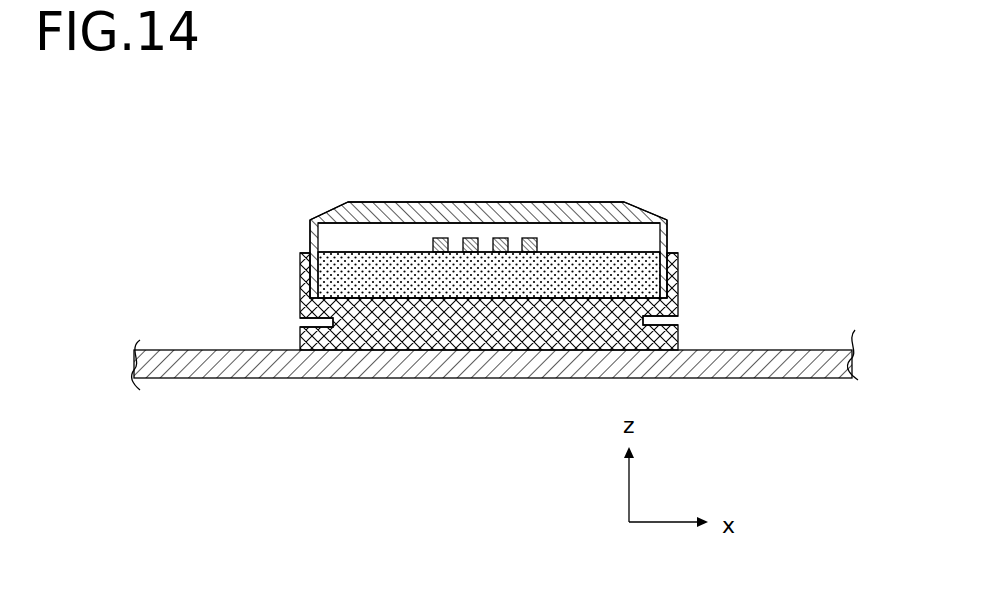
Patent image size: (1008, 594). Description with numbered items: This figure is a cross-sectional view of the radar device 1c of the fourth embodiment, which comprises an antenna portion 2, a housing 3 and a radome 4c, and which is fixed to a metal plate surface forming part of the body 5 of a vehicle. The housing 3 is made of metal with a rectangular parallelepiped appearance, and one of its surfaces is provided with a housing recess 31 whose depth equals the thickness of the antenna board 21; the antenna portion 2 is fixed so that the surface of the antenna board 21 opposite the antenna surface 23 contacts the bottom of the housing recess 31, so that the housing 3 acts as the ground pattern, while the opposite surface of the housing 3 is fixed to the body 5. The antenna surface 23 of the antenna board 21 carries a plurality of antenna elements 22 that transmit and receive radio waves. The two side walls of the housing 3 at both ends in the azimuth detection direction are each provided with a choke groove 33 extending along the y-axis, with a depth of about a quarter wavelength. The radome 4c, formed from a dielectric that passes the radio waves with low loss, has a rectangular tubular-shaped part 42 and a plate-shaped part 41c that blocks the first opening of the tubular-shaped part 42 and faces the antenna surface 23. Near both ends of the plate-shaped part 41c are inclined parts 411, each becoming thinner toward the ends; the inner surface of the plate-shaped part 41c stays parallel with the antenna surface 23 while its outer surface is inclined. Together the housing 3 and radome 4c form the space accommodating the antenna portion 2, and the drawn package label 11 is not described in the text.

The radar device 1c is at (493, 251).
The antenna portion 2 is at (596, 236).
The housing 3 is at (493, 350).
The housing recess 31 is at (533, 282).
The choke groove 33 is at (301, 322).
The radome 4c is at (488, 219).
The plate-shaped part 41c is at (540, 215).
The inclined part 411 is at (338, 206).
The tubular-shaped part 42 is at (311, 229).
The package 11 is at (302, 254).
The antenna board 21 is at (398, 266).
The antenna elements 22 is at (468, 238).
The antenna surface 23 is at (357, 247).
The body 5 is at (245, 366).